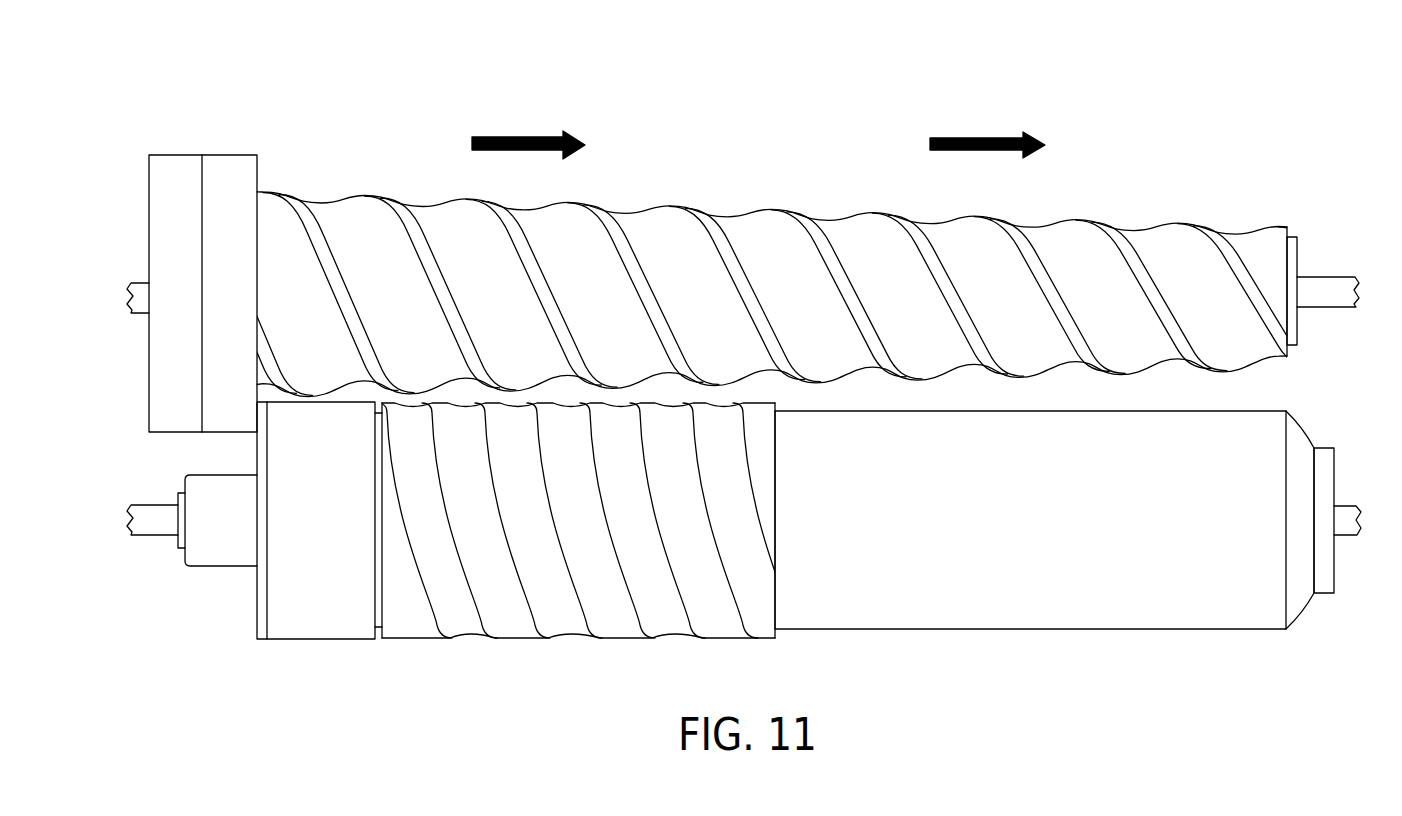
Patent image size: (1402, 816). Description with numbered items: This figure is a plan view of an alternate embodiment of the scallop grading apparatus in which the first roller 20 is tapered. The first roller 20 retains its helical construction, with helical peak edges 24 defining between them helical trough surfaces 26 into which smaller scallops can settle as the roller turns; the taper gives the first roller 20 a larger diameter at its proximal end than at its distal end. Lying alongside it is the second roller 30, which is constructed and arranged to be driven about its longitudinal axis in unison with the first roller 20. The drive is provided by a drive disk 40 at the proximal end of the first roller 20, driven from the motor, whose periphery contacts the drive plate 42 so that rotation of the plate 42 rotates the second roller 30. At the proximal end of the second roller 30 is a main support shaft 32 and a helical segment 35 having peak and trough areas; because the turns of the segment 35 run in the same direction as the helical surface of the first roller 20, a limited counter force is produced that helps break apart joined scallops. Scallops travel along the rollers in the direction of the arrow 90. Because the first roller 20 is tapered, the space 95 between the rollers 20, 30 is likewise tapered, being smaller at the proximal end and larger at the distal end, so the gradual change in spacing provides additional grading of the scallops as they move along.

The first roller 20 is at (781, 251).
The peak edge 24 is at (680, 205).
The trough surface 26 is at (860, 245).
The second roller 30 is at (995, 647).
The main support shaft 32 is at (155, 530).
The helical roller segment 35 is at (611, 652).
The drive disk 40 is at (231, 167).
The drive plate 42 is at (257, 585).
The arrow 90 is at (538, 136).
The space between rollers 95 is at (1087, 387).